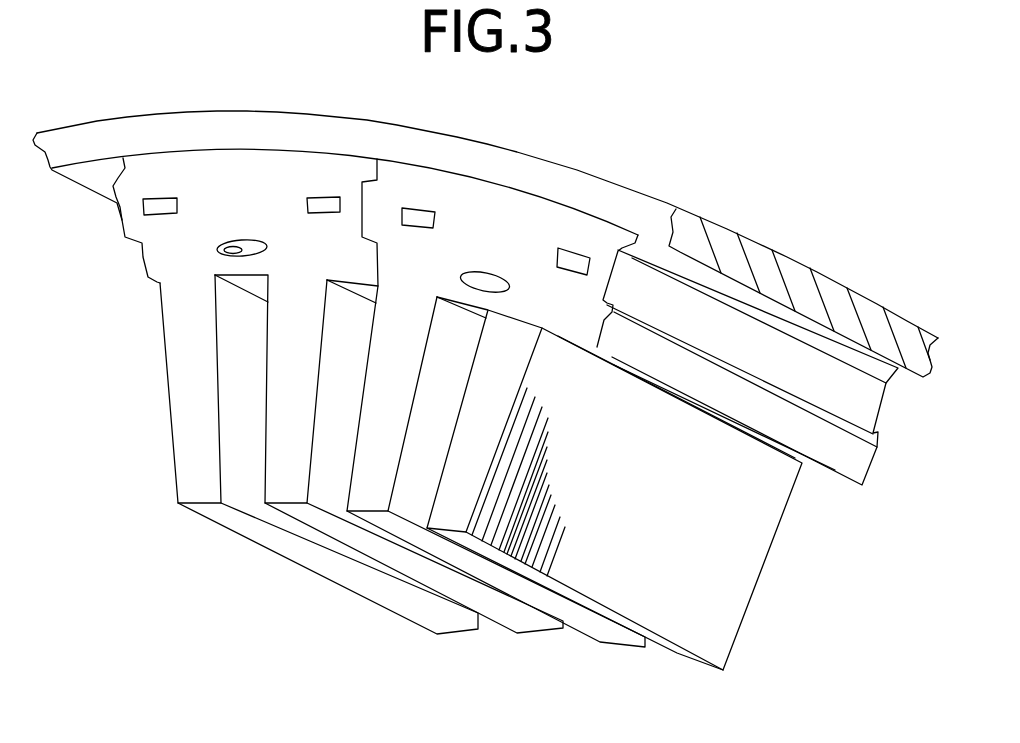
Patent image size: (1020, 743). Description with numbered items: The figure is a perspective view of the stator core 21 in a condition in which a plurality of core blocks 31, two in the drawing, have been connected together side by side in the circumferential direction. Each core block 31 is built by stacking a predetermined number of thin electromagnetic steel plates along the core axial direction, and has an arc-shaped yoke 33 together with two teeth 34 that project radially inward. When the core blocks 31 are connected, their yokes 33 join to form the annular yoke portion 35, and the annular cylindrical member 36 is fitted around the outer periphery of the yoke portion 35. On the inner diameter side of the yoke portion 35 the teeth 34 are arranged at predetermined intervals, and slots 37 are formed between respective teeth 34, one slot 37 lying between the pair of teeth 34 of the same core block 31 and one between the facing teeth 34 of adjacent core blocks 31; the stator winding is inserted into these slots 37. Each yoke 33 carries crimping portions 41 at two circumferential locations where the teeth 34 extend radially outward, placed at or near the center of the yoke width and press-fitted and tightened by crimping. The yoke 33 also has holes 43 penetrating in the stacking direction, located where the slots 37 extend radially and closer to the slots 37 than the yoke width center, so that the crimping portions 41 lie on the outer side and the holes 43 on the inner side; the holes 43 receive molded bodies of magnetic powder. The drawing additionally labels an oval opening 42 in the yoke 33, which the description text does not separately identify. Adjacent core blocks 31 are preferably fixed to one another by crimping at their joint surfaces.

The stator core 21 is at (800, 206).
The core block 31 is at (172, 442).
The yoke 33 is at (232, 170).
The teeth 34 is at (257, 482).
The yoke portion 35 is at (140, 174).
The annular cylindrical member 36 is at (623, 200).
The slots 37 is at (410, 503).
The crimping portions 41 is at (415, 208).
The hole 42 is at (473, 273).
The holes 43 is at (233, 248).